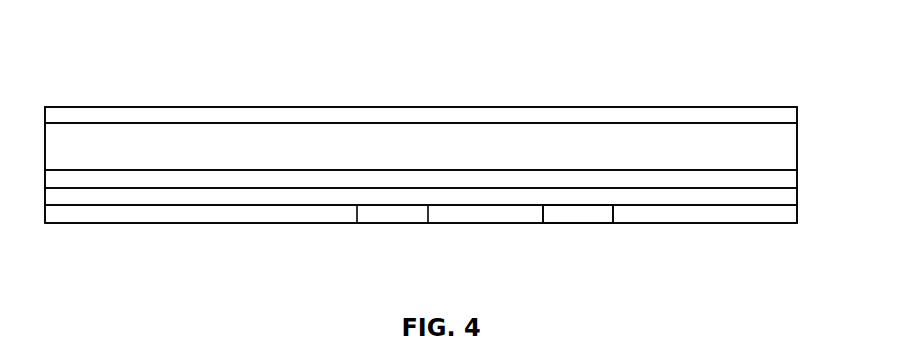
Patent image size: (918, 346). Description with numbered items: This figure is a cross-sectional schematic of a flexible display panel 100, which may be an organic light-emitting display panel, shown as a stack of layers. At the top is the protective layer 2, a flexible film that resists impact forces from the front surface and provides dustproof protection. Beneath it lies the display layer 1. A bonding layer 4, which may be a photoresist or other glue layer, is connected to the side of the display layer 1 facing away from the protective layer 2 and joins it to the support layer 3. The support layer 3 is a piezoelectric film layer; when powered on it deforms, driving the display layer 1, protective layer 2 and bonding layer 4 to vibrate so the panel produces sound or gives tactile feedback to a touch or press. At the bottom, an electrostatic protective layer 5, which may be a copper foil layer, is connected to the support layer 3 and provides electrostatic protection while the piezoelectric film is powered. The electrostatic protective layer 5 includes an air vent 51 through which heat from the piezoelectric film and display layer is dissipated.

The flexible display panel 100 is at (143, 63).
The protective layer 2 is at (240, 113).
The display layer 1 is at (436, 147).
The bonding layer 4 is at (787, 178).
The support layer 3 is at (275, 200).
The electrostatic protective layer 5 is at (442, 213).
The air vent 51 is at (578, 213).